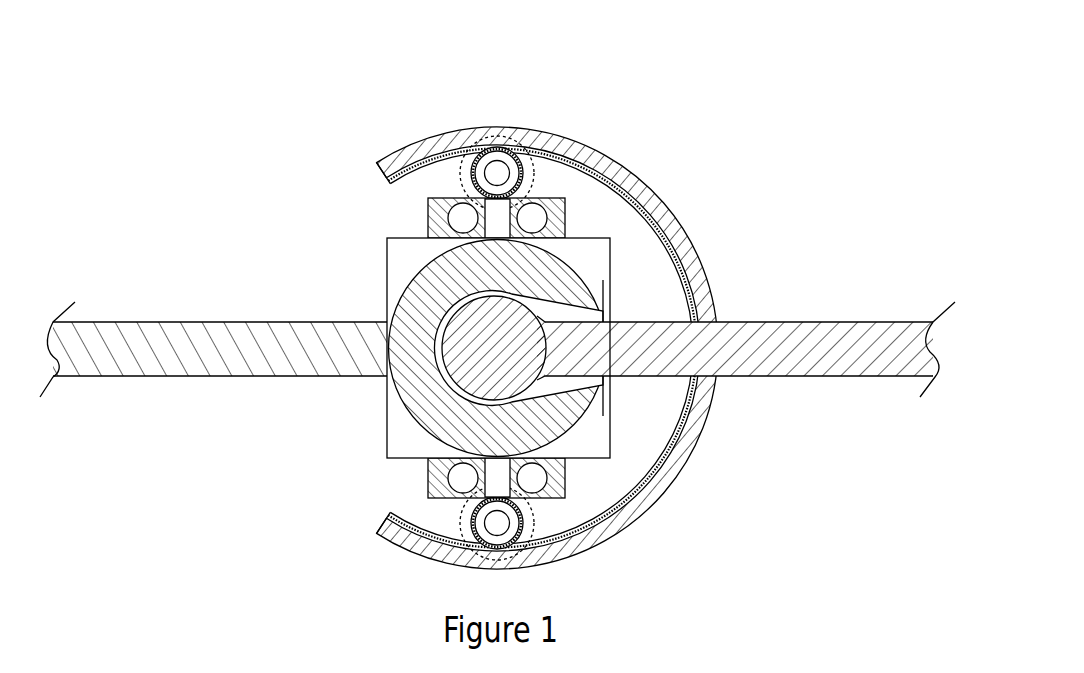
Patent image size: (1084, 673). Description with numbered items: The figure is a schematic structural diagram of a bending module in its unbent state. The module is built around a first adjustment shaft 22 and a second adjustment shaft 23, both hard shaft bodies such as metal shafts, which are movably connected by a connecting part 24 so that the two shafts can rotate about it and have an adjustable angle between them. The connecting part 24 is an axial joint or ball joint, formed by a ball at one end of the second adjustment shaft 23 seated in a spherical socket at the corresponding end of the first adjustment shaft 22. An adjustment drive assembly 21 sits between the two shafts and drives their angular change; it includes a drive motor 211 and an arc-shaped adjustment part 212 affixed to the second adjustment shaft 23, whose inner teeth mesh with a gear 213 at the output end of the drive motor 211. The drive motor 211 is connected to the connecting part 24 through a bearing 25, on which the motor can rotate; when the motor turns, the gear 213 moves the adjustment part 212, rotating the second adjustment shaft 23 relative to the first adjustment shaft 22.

The adjustment drive assembly 21 is at (547, 284).
The drive motor 211 is at (455, 147).
The adjustment part 212 is at (634, 148).
The gear 213 is at (525, 146).
The first adjustment shaft 22 is at (288, 322).
The second adjustment shaft 23 is at (830, 325).
The connecting part 24 is at (362, 450).
The bearing 25 is at (415, 205).